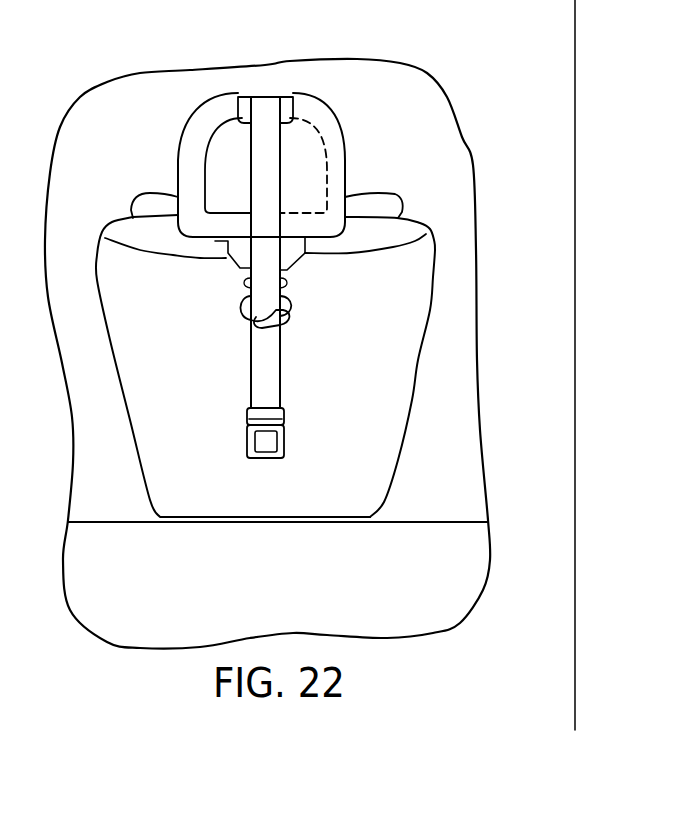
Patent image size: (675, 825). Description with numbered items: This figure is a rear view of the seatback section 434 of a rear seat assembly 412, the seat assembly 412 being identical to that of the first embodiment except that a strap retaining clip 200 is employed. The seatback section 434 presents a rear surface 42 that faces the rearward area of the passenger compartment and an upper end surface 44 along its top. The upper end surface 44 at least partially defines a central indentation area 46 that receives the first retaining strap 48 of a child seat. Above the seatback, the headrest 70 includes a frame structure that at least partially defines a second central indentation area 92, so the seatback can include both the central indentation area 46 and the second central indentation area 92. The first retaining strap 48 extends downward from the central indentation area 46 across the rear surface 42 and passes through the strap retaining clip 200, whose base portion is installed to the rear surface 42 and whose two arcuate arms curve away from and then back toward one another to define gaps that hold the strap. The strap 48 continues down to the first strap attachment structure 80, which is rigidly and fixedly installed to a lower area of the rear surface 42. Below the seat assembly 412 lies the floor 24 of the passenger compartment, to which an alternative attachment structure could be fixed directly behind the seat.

The floor 24 is at (125, 587).
The rear surface 42 is at (345, 383).
The upper end surface 44 is at (406, 233).
The central indentation area 46 is at (238, 265).
The first retaining strap 48 is at (265, 366).
The headrest 70 is at (235, 148).
The first strap attachment structure 80 is at (247, 443).
The second central indentation area 92 is at (286, 93).
The strap retaining clip 200 is at (288, 312).
The seat assembly 412 is at (448, 256).
The seatback section 434 is at (378, 310).